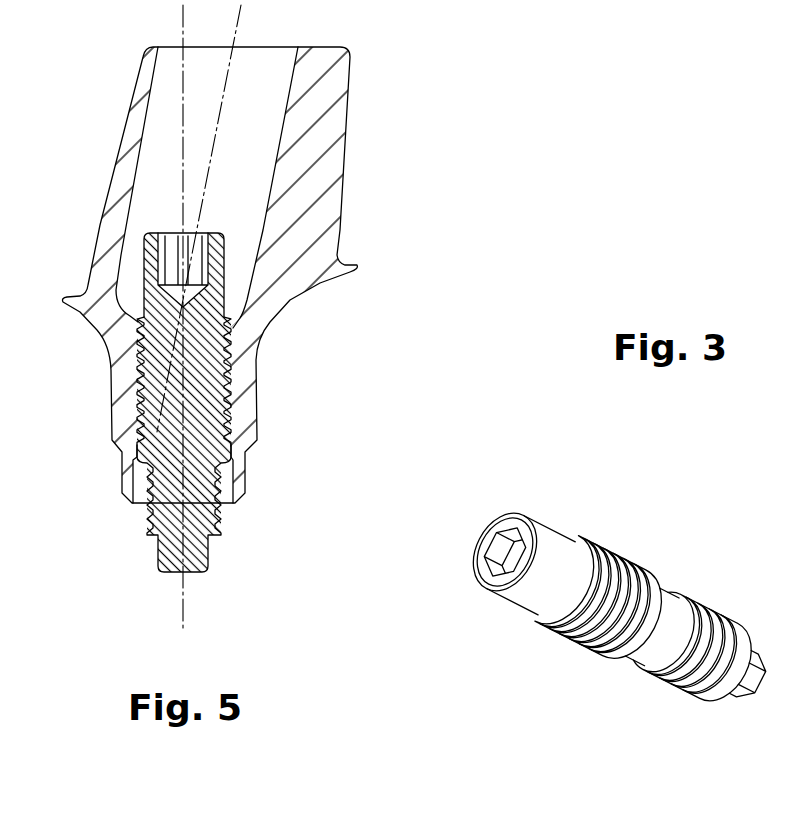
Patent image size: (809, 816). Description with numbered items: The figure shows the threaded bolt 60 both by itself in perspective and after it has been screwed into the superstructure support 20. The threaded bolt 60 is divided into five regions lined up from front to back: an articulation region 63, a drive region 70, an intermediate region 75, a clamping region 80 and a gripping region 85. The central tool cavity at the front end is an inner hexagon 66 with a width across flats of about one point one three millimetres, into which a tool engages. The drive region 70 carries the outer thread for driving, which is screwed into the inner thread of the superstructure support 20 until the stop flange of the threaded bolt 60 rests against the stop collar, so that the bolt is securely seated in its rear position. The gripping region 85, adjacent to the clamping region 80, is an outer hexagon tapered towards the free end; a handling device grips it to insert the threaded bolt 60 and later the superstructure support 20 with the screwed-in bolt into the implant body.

In FIG. 5, the superstructure support 20 is at (318, 163).
In FIG. 5, the threaded bolt 60 is at (145, 560).
In FIG. 3, the threaded bolt 60 is at (617, 574).
In FIG. 3, the articulation region 63 is at (518, 558).
In FIG. 3, the inner hexagon 66 is at (506, 552).
In FIG. 3, the drive region 70 is at (605, 603).
In FIG. 3, the intermediate region 75 is at (652, 626).
In FIG. 3, the clamping region 80 is at (698, 650).
In FIG. 3, the gripping region 85 is at (750, 676).